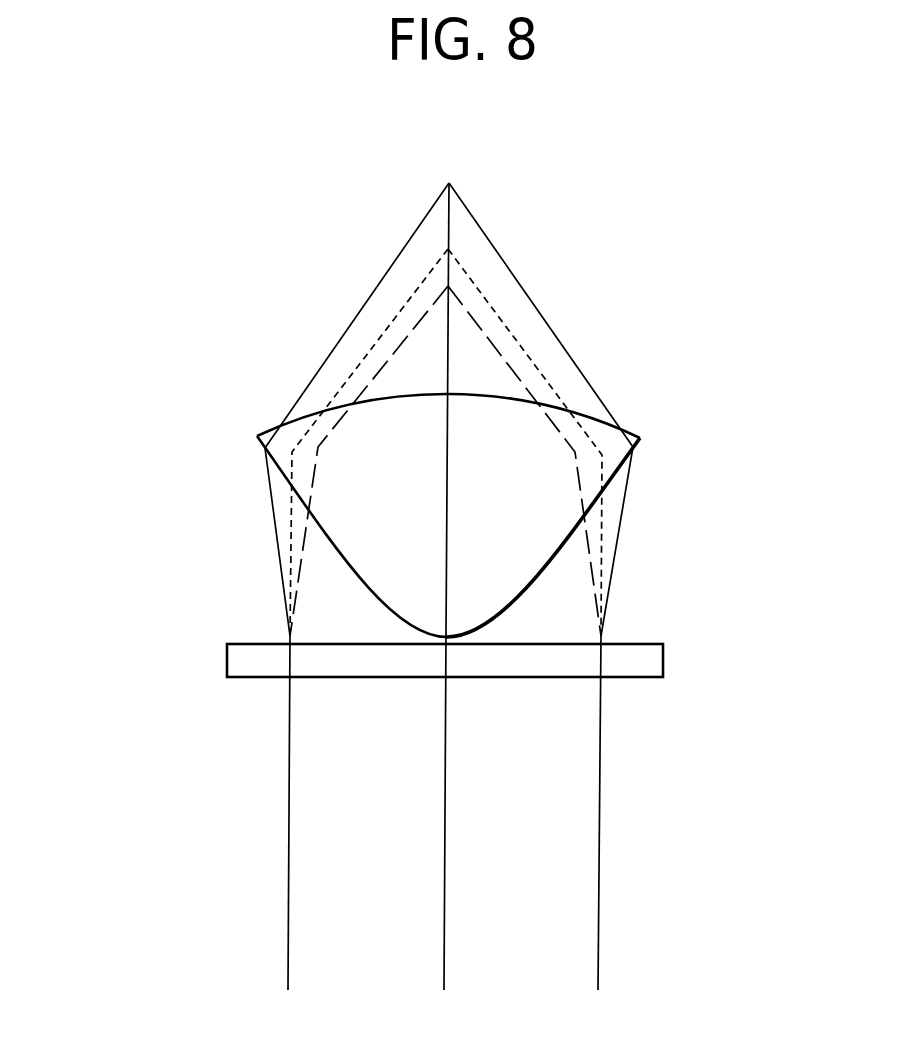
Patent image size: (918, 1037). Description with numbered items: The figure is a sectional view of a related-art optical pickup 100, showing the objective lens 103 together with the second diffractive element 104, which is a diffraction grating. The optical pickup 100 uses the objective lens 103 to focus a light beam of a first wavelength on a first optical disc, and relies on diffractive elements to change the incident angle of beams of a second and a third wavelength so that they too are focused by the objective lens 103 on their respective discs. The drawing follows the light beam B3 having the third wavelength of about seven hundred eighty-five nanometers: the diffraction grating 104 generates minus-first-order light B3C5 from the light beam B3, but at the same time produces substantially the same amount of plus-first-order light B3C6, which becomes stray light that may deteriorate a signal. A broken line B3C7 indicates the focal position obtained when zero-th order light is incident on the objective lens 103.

The optical pickup 100 is at (142, 432).
The objective lens 103 is at (641, 437).
The second diffractive element 104 is at (664, 658).
The light beam having the third wavelength B3 is at (600, 828).
The minus first-order light B3C5 is at (425, 218).
The plus first-order light B3C6 is at (372, 380).
The focal position of zero-th order light B3C7 is at (503, 323).